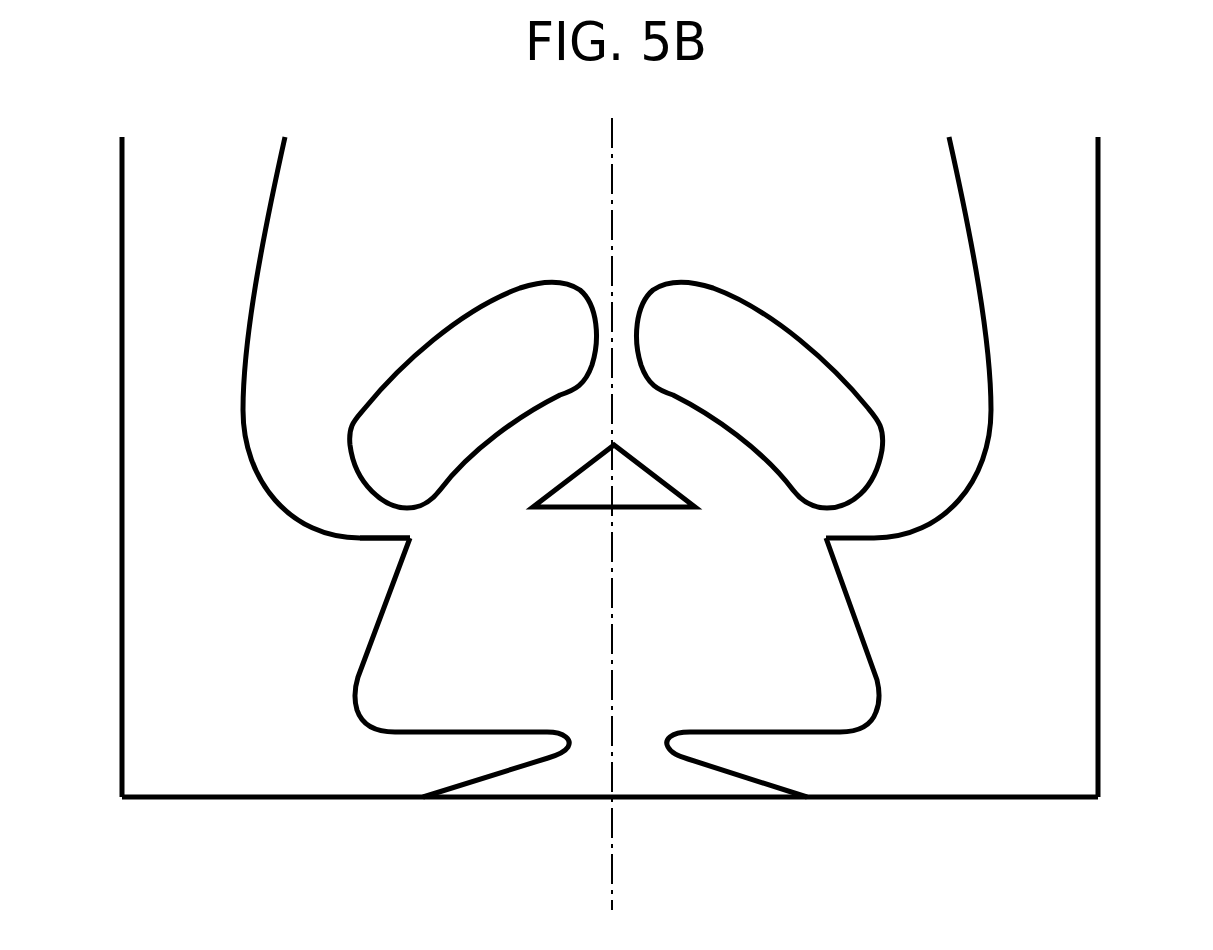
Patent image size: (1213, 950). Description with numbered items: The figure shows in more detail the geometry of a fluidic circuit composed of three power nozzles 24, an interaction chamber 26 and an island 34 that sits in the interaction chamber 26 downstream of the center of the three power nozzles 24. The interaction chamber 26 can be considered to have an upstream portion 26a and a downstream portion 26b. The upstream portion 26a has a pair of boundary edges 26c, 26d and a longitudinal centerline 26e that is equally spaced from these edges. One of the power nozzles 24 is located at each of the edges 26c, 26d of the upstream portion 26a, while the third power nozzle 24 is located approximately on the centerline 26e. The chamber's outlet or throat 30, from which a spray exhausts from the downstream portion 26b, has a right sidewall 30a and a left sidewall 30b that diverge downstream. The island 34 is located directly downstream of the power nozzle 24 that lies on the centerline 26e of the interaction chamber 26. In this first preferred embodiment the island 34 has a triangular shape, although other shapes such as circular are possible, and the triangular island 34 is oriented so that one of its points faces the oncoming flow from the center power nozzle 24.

The power nozzle 24 is at (628, 313).
The interaction chamber 26 is at (803, 637).
The upstream portion 26a is at (560, 418).
The downstream portion 26b is at (492, 557).
The boundary edge 26c is at (410, 523).
The boundary edge 26d is at (823, 524).
The longitudinal centerline 26e is at (612, 625).
The throat 30 is at (647, 779).
The right sidewall 30a is at (733, 773).
The left sidewall 30b is at (507, 772).
The island 34 is at (627, 490).